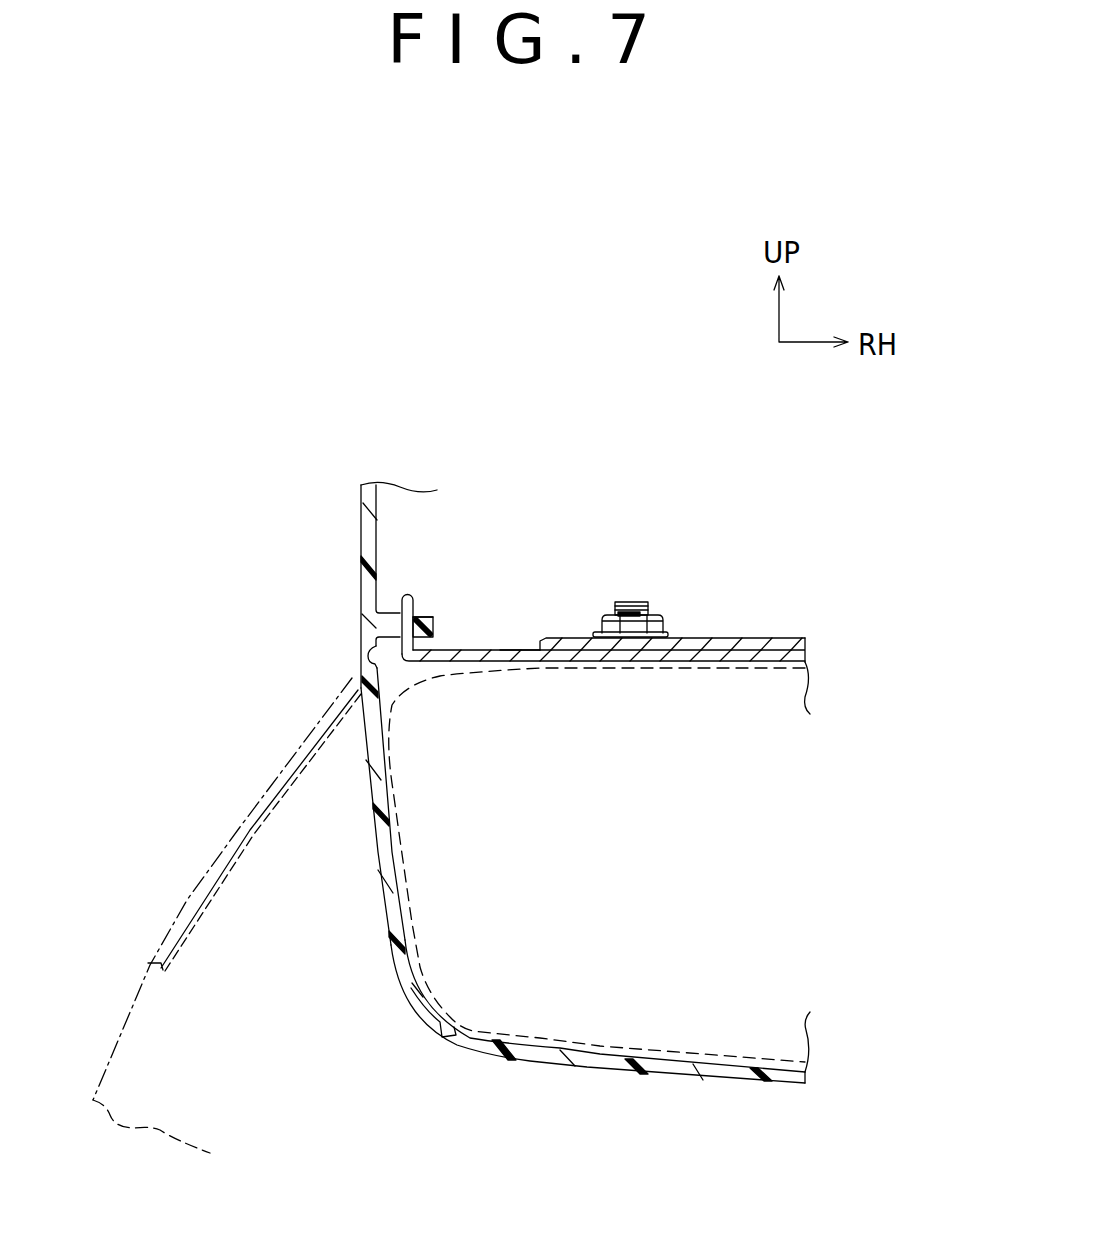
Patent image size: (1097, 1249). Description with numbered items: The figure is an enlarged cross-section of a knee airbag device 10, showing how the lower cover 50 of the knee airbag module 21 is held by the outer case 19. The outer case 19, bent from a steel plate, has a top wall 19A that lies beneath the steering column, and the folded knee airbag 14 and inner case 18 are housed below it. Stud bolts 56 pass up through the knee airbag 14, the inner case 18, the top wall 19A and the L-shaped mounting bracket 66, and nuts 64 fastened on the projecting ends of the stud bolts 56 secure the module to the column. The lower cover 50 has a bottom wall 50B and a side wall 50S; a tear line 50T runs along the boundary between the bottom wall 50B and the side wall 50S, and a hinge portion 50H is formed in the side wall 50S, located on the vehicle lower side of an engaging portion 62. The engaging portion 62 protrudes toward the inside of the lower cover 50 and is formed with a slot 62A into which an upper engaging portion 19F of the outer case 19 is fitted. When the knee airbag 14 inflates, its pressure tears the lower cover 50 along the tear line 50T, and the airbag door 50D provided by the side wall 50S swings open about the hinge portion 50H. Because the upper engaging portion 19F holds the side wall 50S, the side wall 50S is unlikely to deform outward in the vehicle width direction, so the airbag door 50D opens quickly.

The knee airbag device 10 is at (277, 648).
The knee airbag 14 is at (140, 1008).
The inner case 18 is at (395, 903).
The outer case 19 is at (600, 607).
The top wall 19A is at (520, 648).
The upper engaging portion 19F is at (410, 594).
The knee airbag module 21 is at (833, 600).
The lower cover 50 is at (479, 832).
The side wall 50S is at (380, 853).
The bottom wall 50B is at (625, 1085).
The airbag door 50D is at (243, 822).
The hinge portion 50H is at (377, 664).
The tear line 50T is at (453, 1030).
The stud bolt 56 is at (639, 601).
The engaging portion 62 is at (446, 628).
The slot 62A is at (421, 613).
The nut 64 is at (661, 618).
The mounting bracket 66 is at (760, 646).